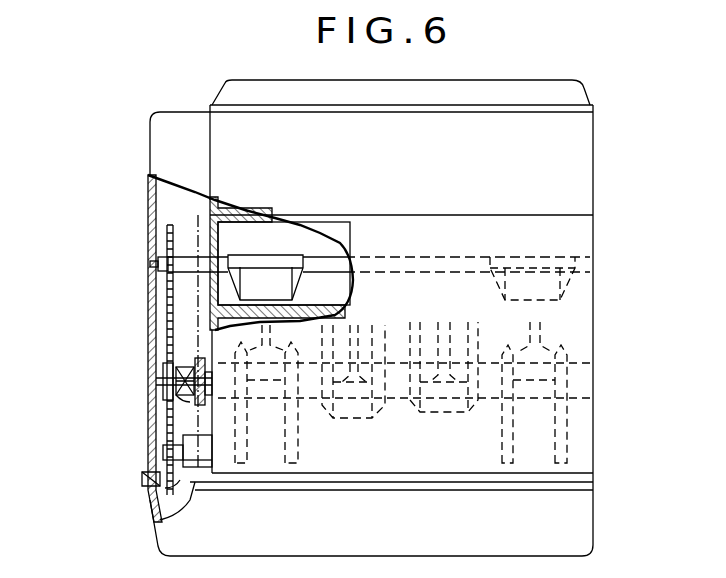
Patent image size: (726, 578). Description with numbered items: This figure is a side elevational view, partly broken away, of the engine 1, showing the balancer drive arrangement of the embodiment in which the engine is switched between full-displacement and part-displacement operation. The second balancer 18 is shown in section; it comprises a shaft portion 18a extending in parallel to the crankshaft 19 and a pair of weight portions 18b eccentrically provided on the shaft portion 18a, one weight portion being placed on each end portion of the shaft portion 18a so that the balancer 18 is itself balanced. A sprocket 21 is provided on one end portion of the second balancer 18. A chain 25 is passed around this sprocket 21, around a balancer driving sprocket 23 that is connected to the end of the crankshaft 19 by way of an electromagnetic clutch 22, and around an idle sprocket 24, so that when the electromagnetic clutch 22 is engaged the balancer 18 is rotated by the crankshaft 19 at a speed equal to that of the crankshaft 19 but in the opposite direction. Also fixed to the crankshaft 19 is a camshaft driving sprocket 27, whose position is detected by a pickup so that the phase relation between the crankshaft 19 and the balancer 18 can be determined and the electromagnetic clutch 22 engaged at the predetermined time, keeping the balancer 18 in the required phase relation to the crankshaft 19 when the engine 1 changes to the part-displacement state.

The engine 1 is at (590, 71).
The shaft portion 18a is at (150, 262).
The weight portions 18b is at (265, 275).
The second balancer 18 is at (439, 250).
The crankshaft 19 is at (582, 362).
The sprocket 21 is at (164, 280).
The electromagnetic clutch 22 is at (178, 404).
The balancer driving sprocket 23 is at (165, 347).
The idle sprocket 24 is at (165, 462).
The chain 25 is at (146, 322).
The camshaft driving sprocket 27 is at (183, 408).